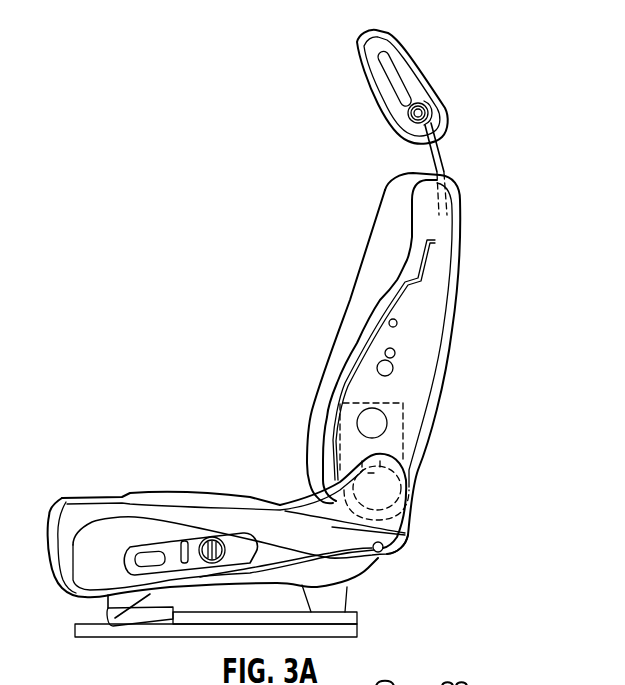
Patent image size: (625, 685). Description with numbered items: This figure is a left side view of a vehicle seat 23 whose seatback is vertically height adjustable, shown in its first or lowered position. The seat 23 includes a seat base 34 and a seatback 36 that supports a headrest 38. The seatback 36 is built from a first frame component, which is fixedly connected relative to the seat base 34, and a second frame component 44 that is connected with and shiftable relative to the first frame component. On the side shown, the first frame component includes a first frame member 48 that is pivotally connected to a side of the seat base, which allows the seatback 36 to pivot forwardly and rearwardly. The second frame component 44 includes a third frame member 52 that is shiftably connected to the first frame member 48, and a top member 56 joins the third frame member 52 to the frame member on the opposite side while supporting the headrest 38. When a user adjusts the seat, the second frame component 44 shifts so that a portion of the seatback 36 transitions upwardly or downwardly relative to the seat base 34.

The seat 23 is at (122, 199).
The seat base 34 is at (141, 485).
The seatback 36 is at (322, 287).
The headrest 38 is at (392, 68).
The second frame component 44 is at (336, 363).
The first frame member 48 is at (403, 443).
The third frame member 52 is at (400, 338).
The top member 56 is at (424, 194).